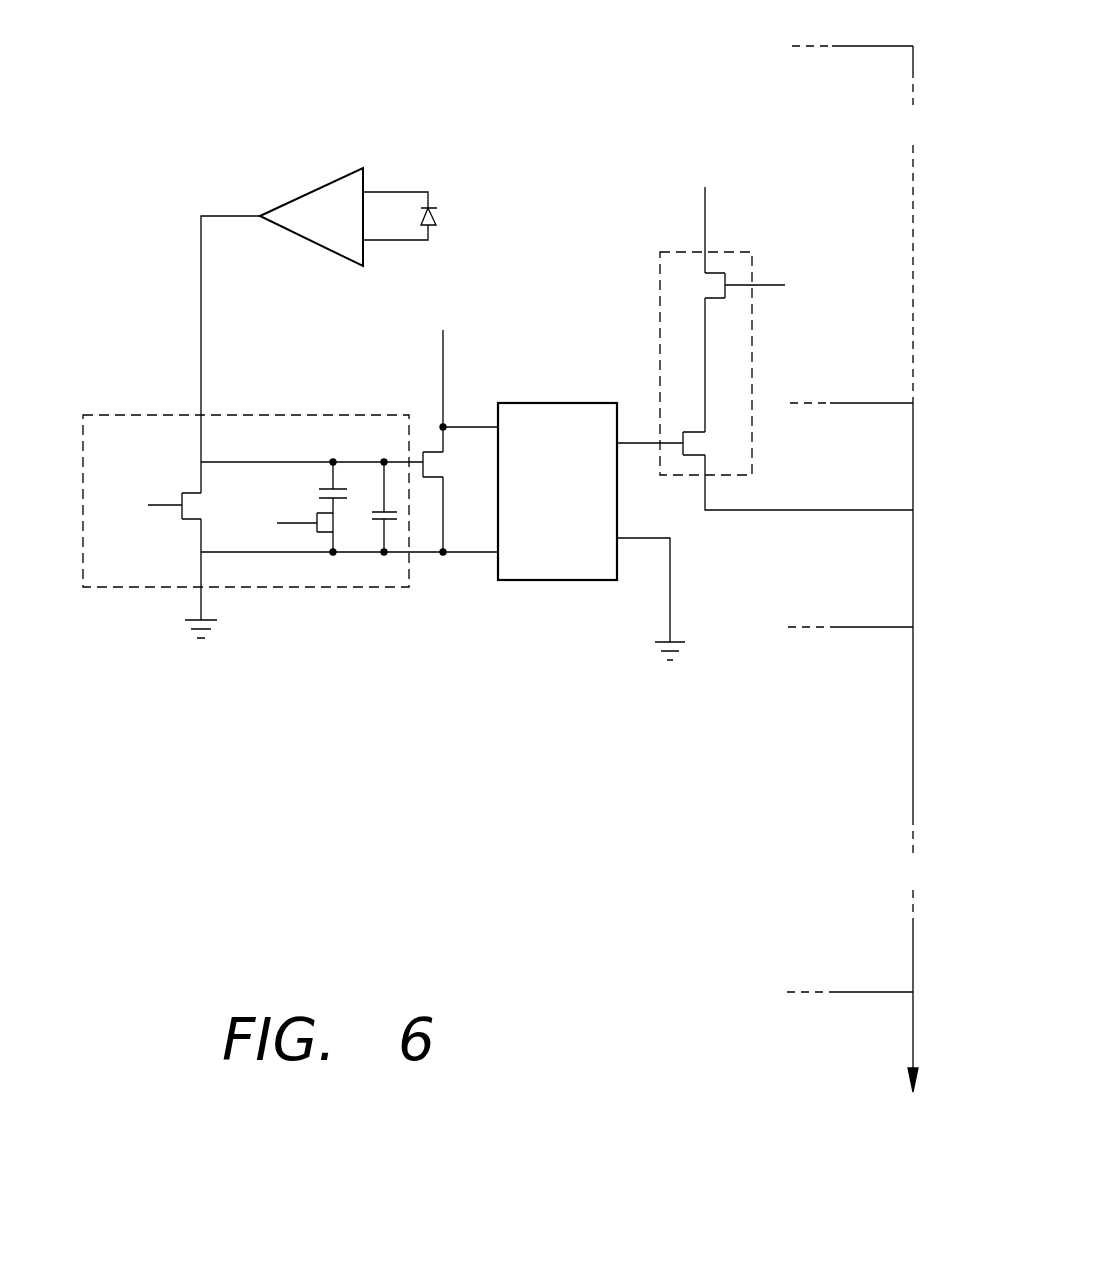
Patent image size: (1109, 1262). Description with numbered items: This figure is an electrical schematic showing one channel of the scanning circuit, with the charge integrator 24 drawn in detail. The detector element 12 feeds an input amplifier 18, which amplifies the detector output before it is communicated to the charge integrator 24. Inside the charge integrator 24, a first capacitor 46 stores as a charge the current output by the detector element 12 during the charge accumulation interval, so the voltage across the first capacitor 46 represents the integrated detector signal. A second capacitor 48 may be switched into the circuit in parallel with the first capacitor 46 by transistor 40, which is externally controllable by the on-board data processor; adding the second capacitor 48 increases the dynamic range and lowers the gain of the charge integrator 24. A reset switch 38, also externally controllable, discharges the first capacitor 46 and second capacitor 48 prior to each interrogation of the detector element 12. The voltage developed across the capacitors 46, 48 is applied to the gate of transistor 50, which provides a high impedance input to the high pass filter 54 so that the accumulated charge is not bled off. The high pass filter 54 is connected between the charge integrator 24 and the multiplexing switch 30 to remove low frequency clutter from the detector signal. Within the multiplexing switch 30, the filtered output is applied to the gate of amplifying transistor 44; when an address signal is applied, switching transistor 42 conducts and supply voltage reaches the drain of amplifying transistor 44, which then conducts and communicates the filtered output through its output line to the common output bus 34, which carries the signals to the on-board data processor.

The detector element 12 is at (437, 224).
The input amplifier 18 is at (336, 181).
The charge integrator 24 is at (138, 588).
The multiplexing switch 30 is at (752, 340).
The output bus 34 is at (903, 852).
The reset switch 38 is at (185, 521).
The transistor 40 is at (327, 534).
The switching transistor 42 is at (697, 285).
The amplifying transistor 44 is at (702, 445).
The first capacitor 46 is at (377, 521).
The second capacitor 48 is at (318, 491).
The transistor 50 is at (440, 462).
The high pass filter 54 is at (527, 582).